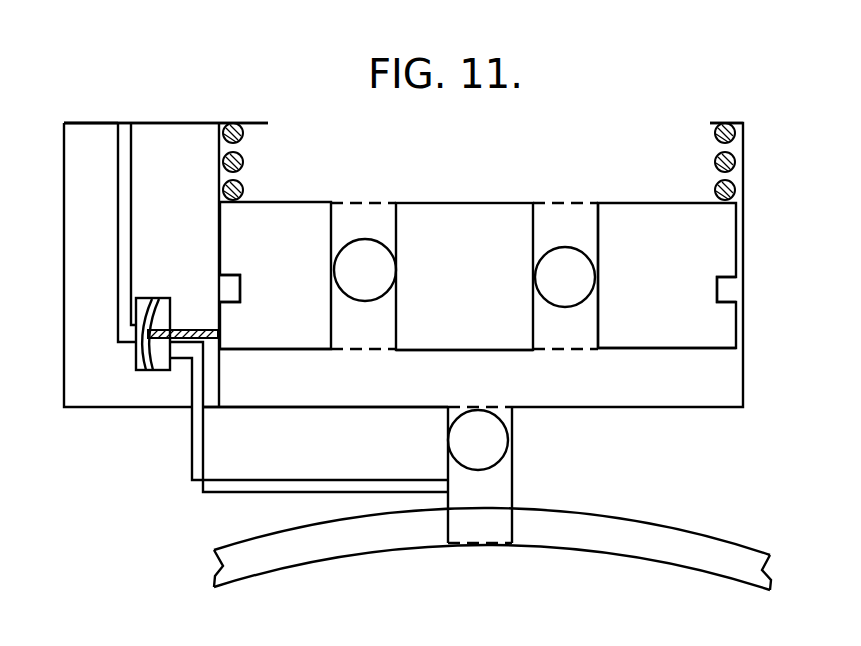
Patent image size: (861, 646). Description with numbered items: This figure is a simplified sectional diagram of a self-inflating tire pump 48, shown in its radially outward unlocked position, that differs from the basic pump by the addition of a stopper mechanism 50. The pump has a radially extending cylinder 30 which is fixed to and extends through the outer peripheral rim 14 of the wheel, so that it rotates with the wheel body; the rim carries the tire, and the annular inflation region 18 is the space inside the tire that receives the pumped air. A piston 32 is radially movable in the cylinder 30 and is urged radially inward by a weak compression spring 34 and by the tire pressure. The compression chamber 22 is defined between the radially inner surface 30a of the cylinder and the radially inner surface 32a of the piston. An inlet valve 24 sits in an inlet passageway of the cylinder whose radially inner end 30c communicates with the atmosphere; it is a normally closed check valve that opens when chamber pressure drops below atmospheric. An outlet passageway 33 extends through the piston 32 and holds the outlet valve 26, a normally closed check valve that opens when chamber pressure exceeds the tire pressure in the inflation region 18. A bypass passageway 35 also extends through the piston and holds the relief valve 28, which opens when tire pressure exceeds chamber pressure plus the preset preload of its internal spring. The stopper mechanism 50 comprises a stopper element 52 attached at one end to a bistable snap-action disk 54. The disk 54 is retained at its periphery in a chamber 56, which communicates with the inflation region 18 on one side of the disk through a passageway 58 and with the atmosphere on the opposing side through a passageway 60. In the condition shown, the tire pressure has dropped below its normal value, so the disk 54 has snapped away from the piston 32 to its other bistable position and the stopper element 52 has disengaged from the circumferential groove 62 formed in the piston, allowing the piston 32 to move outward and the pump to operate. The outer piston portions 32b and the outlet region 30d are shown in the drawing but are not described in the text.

The outer peripheral rim 14 is at (735, 558).
The annular inflation region 18 is at (476, 173).
The compression chamber 22 is at (506, 389).
The inlet valve 24 is at (508, 442).
The outlet valve 26 is at (585, 262).
The relief valve 28 is at (398, 258).
The cylinder 30 is at (743, 378).
The radially inner surface of the cylinder 30a is at (378, 406).
The radially inner end of the inlet passageway 30c is at (481, 478).
The passage outlet 30d is at (512, 547).
The piston 32 is at (723, 265).
The radially inner surface of the piston 32a is at (693, 351).
The end block 32b is at (268, 220).
The outlet passageway 33 is at (600, 316).
The compression spring 34 is at (732, 122).
The bypass passageway 35 is at (387, 320).
The self-inflating tire pump 48 is at (653, 130).
The stopper mechanism 50 is at (111, 80).
The stopper element 52 is at (190, 329).
The bistable snap-action disk 54 is at (155, 298).
The chamber 56 is at (137, 355).
The passageway 58 is at (118, 150).
The passageway 60 is at (192, 450).
The circumferential groove 62 is at (240, 303).